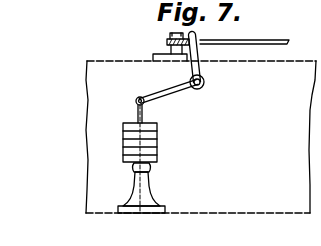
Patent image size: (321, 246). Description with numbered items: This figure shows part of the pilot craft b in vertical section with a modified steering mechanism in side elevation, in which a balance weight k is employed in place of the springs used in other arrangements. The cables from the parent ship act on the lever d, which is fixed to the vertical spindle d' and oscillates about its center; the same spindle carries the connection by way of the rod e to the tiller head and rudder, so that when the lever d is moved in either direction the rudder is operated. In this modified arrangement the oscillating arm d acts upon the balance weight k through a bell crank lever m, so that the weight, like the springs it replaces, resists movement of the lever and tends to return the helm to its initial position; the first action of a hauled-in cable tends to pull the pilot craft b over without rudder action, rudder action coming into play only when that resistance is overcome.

The pilot craft b is at (201, 137).
The rod e is at (250, 40).
The lever d is at (144, 47).
The vertical spindle d' is at (150, 26).
The bell crank lever m is at (170, 98).
The balance weight k is at (157, 142).